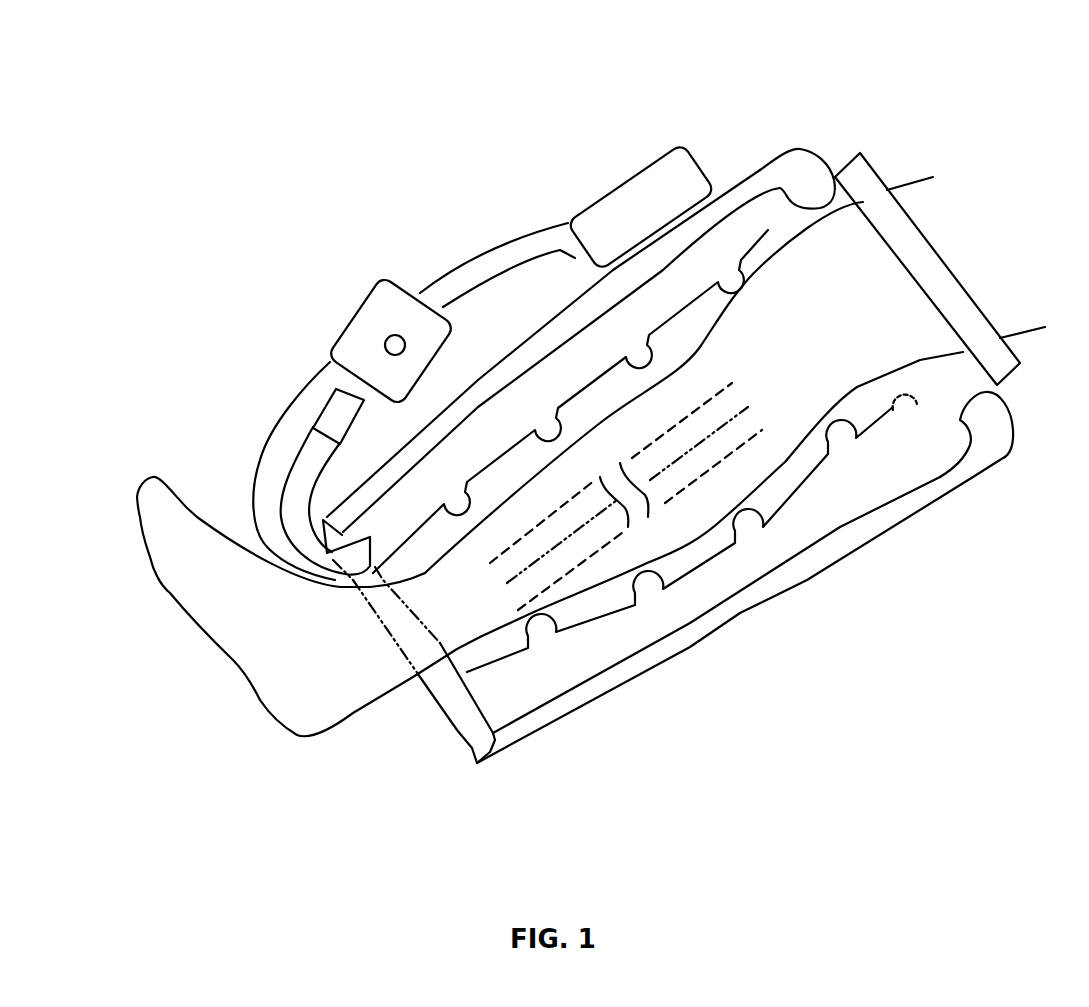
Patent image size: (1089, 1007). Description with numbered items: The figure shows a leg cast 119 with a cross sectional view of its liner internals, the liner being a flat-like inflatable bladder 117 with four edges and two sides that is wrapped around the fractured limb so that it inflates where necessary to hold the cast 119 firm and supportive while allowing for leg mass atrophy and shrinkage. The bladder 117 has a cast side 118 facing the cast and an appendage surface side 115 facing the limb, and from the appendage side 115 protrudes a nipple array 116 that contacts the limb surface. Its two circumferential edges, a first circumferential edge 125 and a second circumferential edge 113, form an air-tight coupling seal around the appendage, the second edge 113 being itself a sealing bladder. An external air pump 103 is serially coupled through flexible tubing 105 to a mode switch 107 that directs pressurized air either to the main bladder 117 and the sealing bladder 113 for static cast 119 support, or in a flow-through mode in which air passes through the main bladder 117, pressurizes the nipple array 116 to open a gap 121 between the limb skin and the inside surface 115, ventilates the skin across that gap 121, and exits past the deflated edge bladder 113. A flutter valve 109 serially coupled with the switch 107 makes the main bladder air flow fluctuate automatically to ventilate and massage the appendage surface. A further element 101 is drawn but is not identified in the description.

The upper housing end 101 is at (785, 215).
The external air pump 103 is at (675, 187).
The flexible tubing 105 is at (463, 275).
The mode switch 107 is at (375, 302).
The flutter valve 109 is at (323, 400).
The circumferential edge2 bladder 113 is at (413, 613).
The appendage surface side 115 is at (512, 655).
The nipple array 116 is at (855, 447).
The inflatable bladder 117 is at (587, 652).
The cast side 118 is at (662, 640).
The cast 119 is at (725, 627).
The gap 121 is at (797, 475).
The circumferential edge1 125 is at (848, 187).